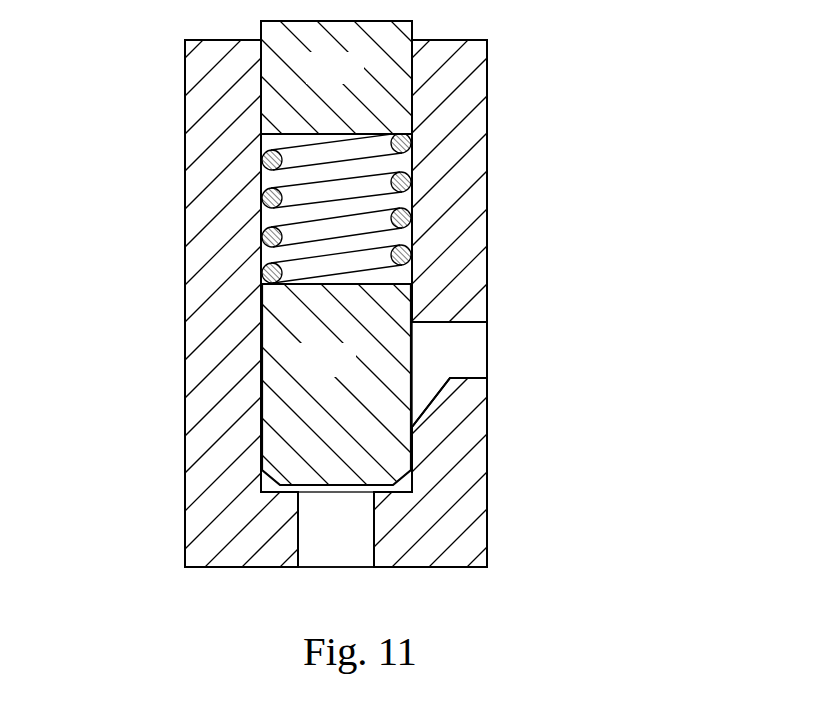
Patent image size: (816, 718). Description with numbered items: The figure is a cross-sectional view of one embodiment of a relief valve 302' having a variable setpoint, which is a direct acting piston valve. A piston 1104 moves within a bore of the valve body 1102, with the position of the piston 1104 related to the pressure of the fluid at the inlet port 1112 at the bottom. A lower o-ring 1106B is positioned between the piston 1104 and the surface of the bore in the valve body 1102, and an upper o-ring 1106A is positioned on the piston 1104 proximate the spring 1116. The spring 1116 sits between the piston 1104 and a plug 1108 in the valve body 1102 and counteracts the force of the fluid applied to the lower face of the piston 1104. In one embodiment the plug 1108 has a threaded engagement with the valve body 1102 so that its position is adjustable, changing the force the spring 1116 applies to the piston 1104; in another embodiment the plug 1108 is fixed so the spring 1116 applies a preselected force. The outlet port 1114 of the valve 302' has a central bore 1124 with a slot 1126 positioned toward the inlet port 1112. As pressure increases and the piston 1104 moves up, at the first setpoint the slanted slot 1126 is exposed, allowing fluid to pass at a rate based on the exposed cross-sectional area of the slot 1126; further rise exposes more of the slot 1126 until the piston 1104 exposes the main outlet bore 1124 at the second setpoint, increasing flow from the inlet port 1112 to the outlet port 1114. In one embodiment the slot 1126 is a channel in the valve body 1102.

The relief valve 302' is at (79, 108).
The valve body 1102 is at (487, 153).
The piston 1104 is at (350, 371).
The upper o-ring 1106A is at (263, 302).
The lower o-ring 1106B is at (263, 447).
The plug 1108 is at (357, 80).
The inlet port 1112 is at (355, 536).
The outlet port 1114 is at (487, 365).
The spring 1116 is at (413, 257).
The central bore 1124 is at (467, 354).
The slot 1126 is at (447, 400).